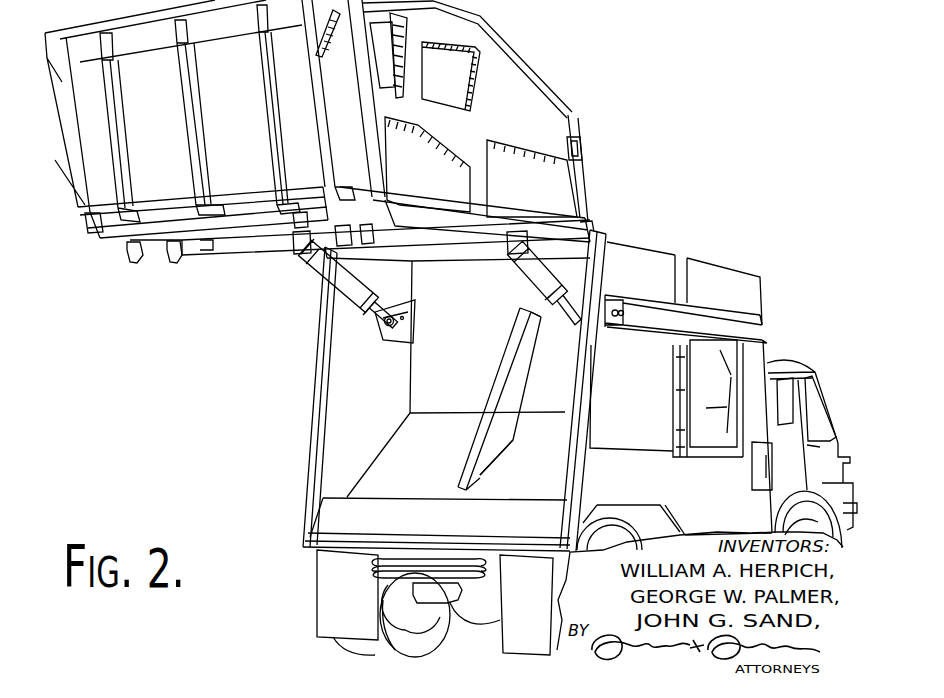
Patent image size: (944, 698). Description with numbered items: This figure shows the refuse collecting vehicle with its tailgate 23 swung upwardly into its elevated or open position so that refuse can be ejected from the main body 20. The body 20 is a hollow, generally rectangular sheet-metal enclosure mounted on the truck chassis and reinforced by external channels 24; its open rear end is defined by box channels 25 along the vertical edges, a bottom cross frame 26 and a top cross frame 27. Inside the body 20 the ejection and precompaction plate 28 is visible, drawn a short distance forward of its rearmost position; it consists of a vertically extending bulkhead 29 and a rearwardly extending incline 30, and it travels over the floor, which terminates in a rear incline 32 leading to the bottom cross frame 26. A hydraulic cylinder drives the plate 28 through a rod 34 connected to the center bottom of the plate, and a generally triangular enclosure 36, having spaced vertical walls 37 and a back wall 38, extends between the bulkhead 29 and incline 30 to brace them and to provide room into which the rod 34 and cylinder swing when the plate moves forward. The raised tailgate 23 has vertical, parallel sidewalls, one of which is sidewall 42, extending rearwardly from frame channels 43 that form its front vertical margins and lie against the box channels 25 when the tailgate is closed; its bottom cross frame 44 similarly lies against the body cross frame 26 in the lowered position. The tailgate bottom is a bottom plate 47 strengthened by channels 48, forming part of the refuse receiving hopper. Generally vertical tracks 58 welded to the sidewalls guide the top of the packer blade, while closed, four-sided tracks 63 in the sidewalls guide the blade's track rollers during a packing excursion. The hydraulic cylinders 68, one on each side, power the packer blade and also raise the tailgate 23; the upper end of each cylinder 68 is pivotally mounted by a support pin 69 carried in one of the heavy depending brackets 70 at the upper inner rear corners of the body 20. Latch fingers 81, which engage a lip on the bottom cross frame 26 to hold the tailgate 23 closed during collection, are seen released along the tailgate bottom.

The body 20 is at (715, 263).
The tailgate 23 is at (538, 70).
The external channels 24 is at (692, 309).
The box channels 25 is at (313, 417).
The bottom cross frame 26 is at (328, 550).
The top cross frame 27 is at (443, 262).
The ejection and precompaction plate 28 is at (407, 372).
The bulkhead 29 is at (465, 388).
The incline 30 is at (445, 467).
The rear incline 32 is at (451, 535).
The rod 34 is at (643, 515).
The triangular enclosure 36 is at (503, 340).
The vertical walls 37 is at (527, 370).
The back wall 38 is at (500, 397).
The sidewall 42 is at (525, 194).
The frame channels 43 is at (542, 218).
The bottom cross frame 44 is at (390, 228).
The bottom plate 47 is at (243, 107).
The channels 48 is at (300, 120).
The vertically extending tracks 58 is at (548, 128).
The closed four-sided tracks 63 is at (430, 101).
The hydraulic cylinders 68 is at (323, 279).
The support pin 69 is at (397, 326).
The depending brackets 70 is at (406, 312).
The latch fingers 81 is at (173, 261).